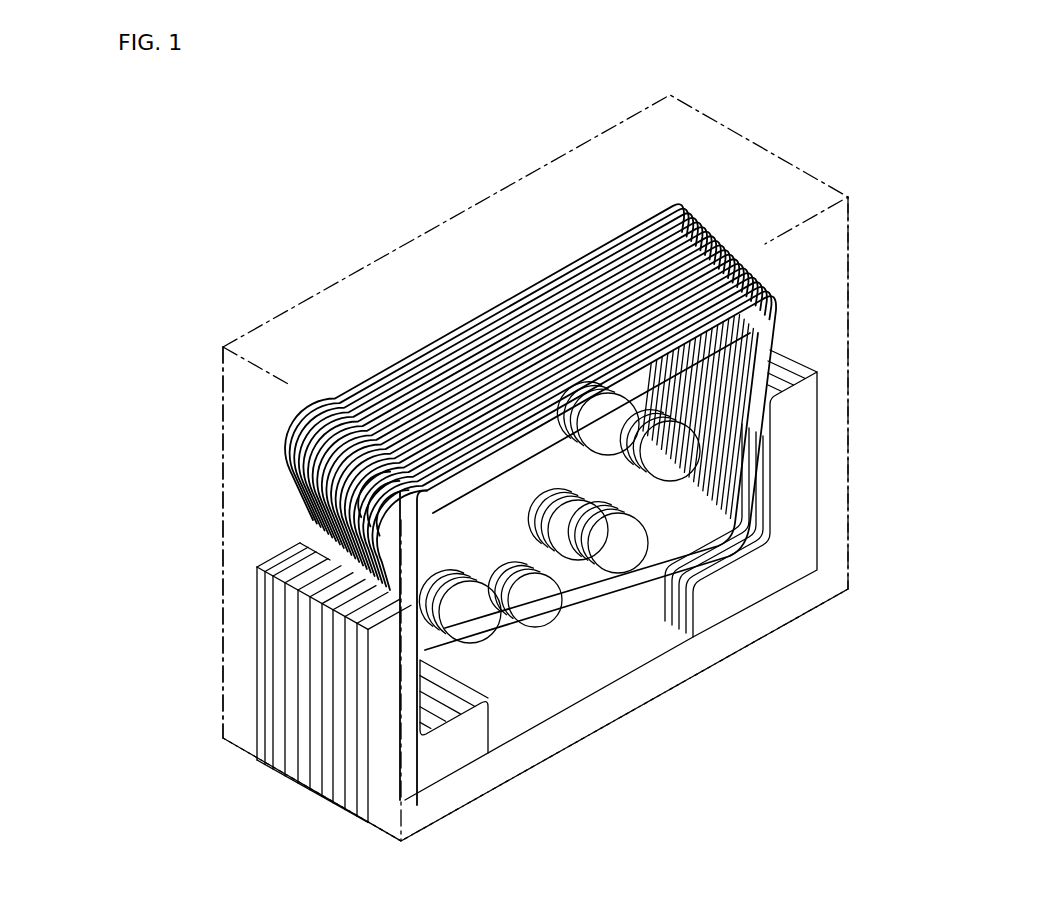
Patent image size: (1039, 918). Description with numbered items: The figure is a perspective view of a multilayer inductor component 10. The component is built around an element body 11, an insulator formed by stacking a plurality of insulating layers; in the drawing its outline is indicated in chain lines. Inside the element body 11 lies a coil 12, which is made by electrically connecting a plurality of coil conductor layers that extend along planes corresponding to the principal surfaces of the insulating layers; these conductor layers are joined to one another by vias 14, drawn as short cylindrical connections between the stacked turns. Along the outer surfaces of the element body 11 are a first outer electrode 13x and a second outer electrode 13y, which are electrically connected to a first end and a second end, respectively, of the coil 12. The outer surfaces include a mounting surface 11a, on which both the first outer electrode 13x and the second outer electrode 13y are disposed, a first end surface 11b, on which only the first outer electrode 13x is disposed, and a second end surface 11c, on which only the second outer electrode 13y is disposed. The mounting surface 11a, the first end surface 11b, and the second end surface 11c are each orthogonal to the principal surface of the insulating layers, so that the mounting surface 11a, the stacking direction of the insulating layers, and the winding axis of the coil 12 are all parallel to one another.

The multilayer inductor component 10 is at (948, 149).
The element body 11 is at (741, 127).
The mounting surface 11a is at (385, 840).
The first end surface 11b is at (243, 588).
The second end surface 11c is at (848, 305).
The coil 12 is at (383, 334).
The first outer electrode 13x is at (318, 752).
The second outer electrode 13y is at (815, 463).
The via 14 is at (467, 618).